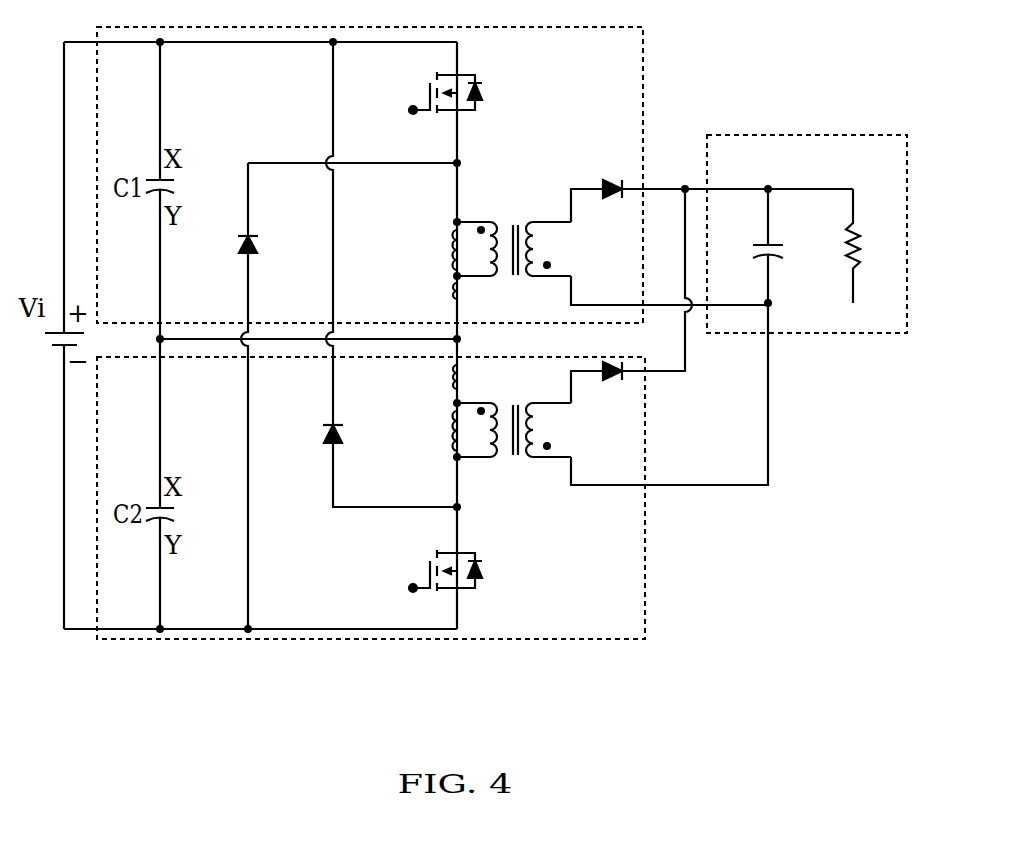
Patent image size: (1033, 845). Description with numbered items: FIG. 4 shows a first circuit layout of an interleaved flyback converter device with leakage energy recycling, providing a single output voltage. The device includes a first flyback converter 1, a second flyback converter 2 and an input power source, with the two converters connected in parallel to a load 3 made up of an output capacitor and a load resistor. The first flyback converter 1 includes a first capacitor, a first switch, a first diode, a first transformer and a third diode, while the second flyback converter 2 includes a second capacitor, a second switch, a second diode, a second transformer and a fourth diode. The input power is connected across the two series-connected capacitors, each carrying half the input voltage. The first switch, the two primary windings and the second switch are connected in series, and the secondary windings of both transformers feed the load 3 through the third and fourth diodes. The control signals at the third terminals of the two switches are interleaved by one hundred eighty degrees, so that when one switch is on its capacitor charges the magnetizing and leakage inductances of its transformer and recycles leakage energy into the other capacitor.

The first flyback converter 1 is at (643, 60).
The second flyback converter 2 is at (645, 575).
The load 3 is at (840, 334).